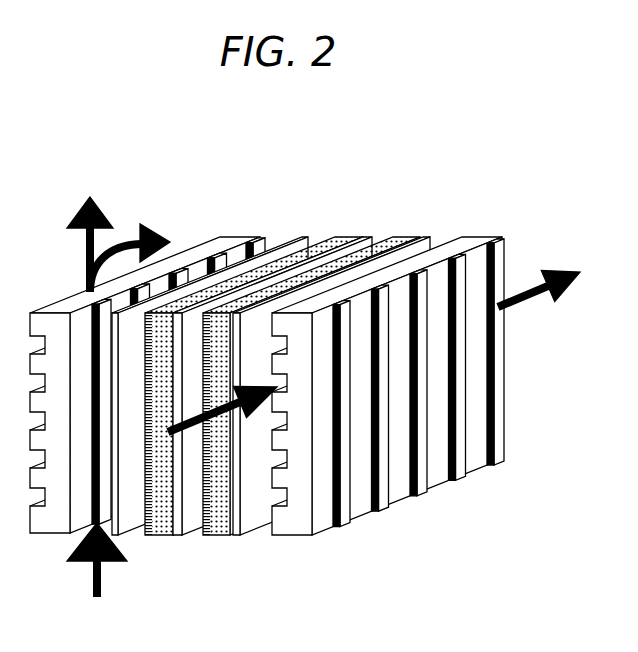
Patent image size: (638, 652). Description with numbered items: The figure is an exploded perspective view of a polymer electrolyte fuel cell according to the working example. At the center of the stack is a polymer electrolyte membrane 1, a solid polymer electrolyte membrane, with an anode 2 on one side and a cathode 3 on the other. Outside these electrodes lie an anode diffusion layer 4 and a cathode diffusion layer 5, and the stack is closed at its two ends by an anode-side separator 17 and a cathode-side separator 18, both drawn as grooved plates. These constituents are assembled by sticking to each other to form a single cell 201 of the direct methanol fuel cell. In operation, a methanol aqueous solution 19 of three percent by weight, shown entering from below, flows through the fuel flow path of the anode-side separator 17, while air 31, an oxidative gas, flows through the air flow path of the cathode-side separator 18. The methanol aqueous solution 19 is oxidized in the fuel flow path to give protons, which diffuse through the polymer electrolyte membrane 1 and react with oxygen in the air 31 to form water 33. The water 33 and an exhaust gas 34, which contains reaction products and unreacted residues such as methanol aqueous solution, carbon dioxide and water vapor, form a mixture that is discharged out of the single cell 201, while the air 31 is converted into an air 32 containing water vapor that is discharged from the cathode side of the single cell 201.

The polymer electrolyte membrane 1 is at (183, 537).
The anode 2 is at (146, 537).
The cathode 3 is at (224, 537).
The anode diffusion layer 4 is at (304, 235).
The cathode diffusion layer 5 is at (428, 235).
The anode-side separator 17 is at (238, 235).
The cathode-side separator 18 is at (472, 237).
The methanol aqueous solution 19 is at (97, 571).
The air 31 is at (208, 418).
The air containing water vapor 32 is at (553, 281).
The water 33 is at (134, 247).
The exhaust gas 34 is at (90, 230).
The single cell 201 is at (538, 180).